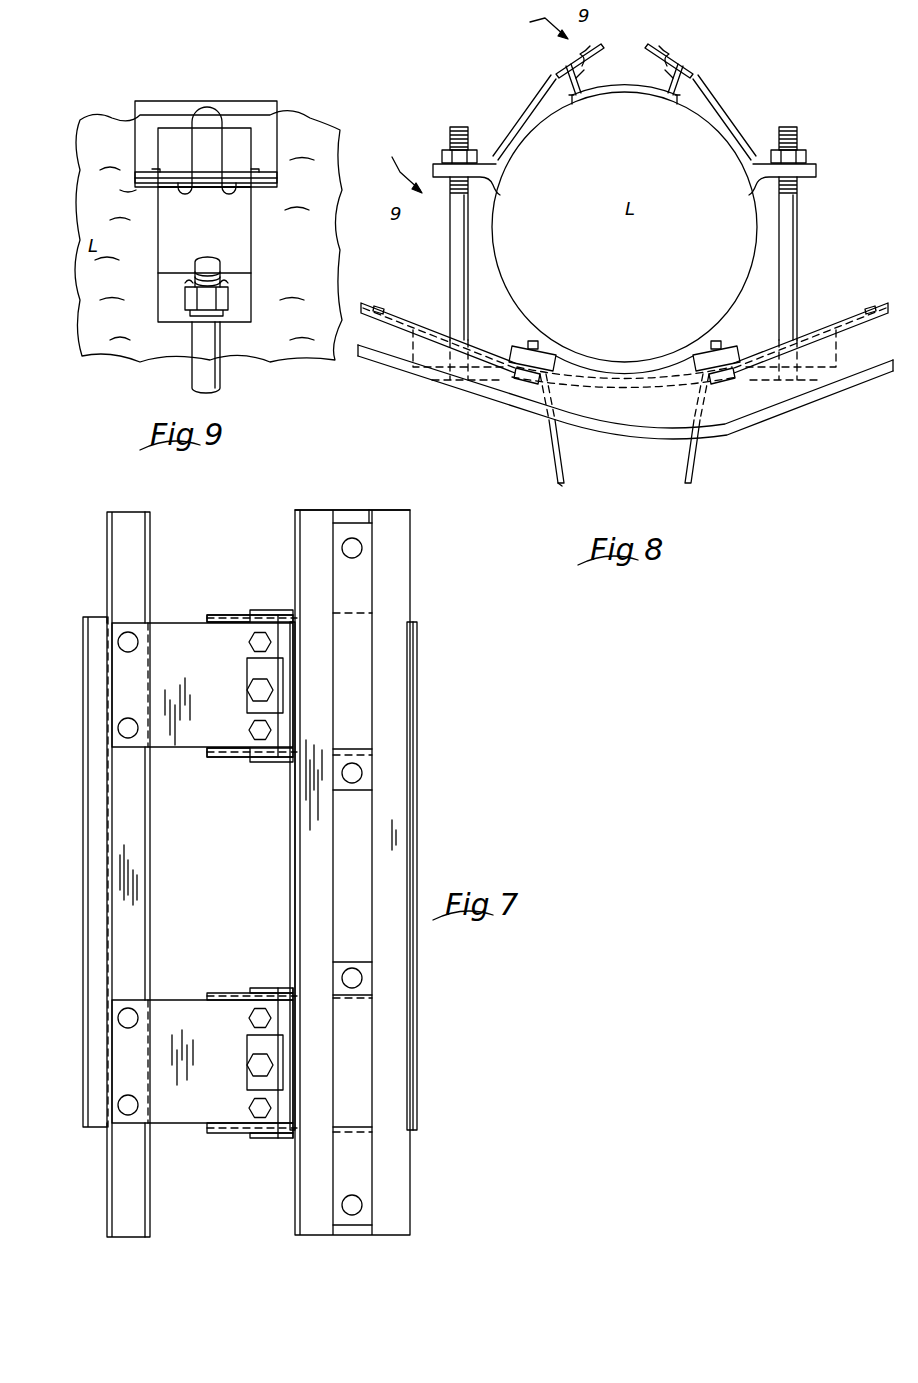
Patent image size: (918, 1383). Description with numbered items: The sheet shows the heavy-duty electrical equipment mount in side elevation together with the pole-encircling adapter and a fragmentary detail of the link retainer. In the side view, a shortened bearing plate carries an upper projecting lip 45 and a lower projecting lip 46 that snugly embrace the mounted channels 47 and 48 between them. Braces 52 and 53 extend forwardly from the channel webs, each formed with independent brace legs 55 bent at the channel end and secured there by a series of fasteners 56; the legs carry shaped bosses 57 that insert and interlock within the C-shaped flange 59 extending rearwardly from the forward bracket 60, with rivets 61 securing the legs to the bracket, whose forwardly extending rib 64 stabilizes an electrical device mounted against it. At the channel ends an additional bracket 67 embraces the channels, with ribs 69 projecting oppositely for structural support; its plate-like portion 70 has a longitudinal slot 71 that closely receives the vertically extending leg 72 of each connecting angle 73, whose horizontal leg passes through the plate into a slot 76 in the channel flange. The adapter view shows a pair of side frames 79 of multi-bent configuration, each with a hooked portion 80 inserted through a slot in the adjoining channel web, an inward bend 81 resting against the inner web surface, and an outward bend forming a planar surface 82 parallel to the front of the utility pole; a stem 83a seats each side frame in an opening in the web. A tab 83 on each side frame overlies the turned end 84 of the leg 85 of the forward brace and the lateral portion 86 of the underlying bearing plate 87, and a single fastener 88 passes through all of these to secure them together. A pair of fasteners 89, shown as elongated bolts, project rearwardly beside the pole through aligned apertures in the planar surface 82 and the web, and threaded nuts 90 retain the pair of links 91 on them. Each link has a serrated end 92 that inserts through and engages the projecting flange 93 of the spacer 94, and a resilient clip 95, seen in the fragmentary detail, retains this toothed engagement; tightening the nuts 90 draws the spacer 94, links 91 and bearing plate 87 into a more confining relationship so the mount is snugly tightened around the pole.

In FIG. 7, the upper projecting lip 45 is at (265, 612).
In FIG. 7, the lower projecting lip 46 is at (272, 762).
In FIG. 7, the channel 47 is at (205, 617).
In FIG. 7, the channel 48 is at (213, 993).
In FIG. 7, the brace 52 is at (185, 755).
In FIG. 7, the brace 53 is at (165, 1128).
In FIG. 7, the brace leg 55 is at (158, 640).
In FIG. 7, the fastener 56 is at (247, 690).
In FIG. 7, the shaped boss 57 is at (118, 730).
In FIG. 7, the C-shaped flange 59 is at (118, 797).
In FIG. 7, the forward bracket 60 is at (150, 540).
In FIG. 7, the rivet 61 is at (118, 643).
In FIG. 7, the rib 64 is at (88, 868).
In FIG. 7, the bracket 67 is at (410, 566).
In FIG. 7, the rib 69 is at (418, 760).
In FIG. 7, the plate-like portion 70 is at (372, 513).
In FIG. 7, the longitudinal slot 71 is at (372, 542).
In FIG. 7, the vertically extending leg 72 is at (340, 560).
In FIG. 7, the connecting angle 73 is at (372, 608).
In FIG. 7, the slot 76 is at (236, 615).
In FIG. 8, the side frame 79 is at (410, 332).
In FIG. 8, the hooked portion 80 is at (382, 310).
In FIG. 8, the inward bend 81 is at (390, 325).
In FIG. 8, the planar surface 82 is at (440, 378).
In FIG. 8, the tab 83 is at (505, 374).
In FIG. 8, the stem 83a is at (518, 368).
In FIG. 8, the turned end 84 is at (518, 387).
In FIG. 8, the leg 85 is at (567, 480).
In FIG. 8, the lateral portion 86 is at (520, 346).
In FIG. 8, the bearing plate 87 is at (600, 362).
In FIG. 8, the fastener 88 is at (535, 341).
In FIG. 9, the fastener 89 is at (220, 378).
In FIG. 8, the fastener 89 is at (452, 252).
In FIG. 9, the threaded nut 90 is at (230, 297).
In FIG. 8, the threaded nut 90 is at (477, 155).
In FIG. 9, the link 91 is at (238, 242).
In FIG. 8, the link 91 is at (525, 125).
In FIG. 9, the serrated end 92 is at (175, 130).
In FIG. 8, the serrated end 92 is at (665, 76).
In FIG. 9, the projecting flange 93 is at (278, 178).
In FIG. 8, the projecting flange 93 is at (556, 70).
In FIG. 9, the spacer 94 is at (262, 108).
In FIG. 8, the spacer 94 is at (628, 97).
In FIG. 9, the resilient clip 95 is at (207, 108).
In FIG. 8, the resilient clip 95 is at (592, 52).